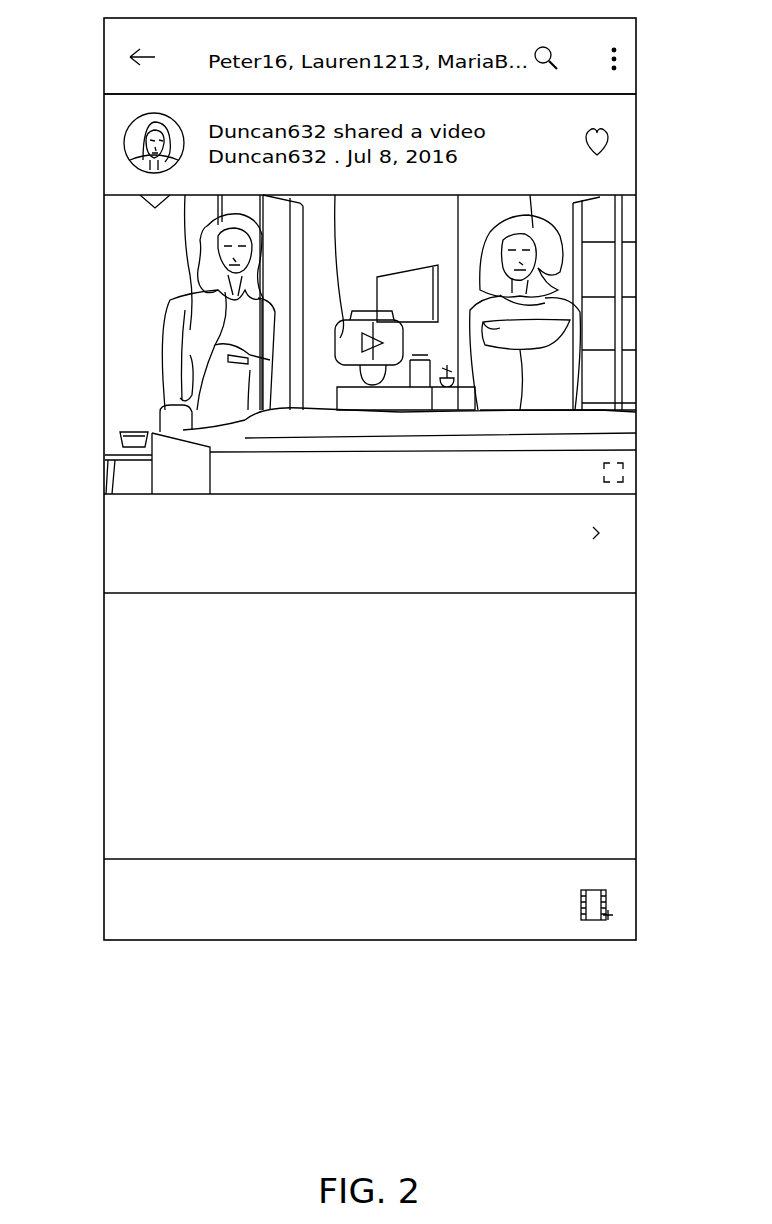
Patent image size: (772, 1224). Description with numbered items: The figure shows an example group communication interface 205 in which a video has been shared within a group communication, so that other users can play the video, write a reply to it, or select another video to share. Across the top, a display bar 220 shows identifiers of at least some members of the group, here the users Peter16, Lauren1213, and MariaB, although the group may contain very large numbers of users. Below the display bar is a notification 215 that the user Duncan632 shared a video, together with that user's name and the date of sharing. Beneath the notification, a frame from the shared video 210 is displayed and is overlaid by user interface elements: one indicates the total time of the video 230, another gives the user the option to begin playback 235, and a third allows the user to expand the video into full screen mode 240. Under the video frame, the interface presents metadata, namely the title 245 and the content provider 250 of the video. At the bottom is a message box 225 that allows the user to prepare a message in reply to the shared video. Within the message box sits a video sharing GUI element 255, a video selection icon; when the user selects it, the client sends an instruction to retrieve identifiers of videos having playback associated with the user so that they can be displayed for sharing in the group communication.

The group communication interface 205 is at (618, 173).
The shared video 210 is at (622, 322).
The notification 215 is at (118, 143).
The display bar 220 is at (125, 68).
The message box 225 is at (115, 897).
The total time of the video 230 is at (582, 460).
The option to begin playback 235 is at (345, 349).
The full screen mode 240 is at (627, 472).
The title 245 is at (118, 571).
The content provider 250 is at (118, 533).
The video sharing GUI element 255 is at (618, 907).